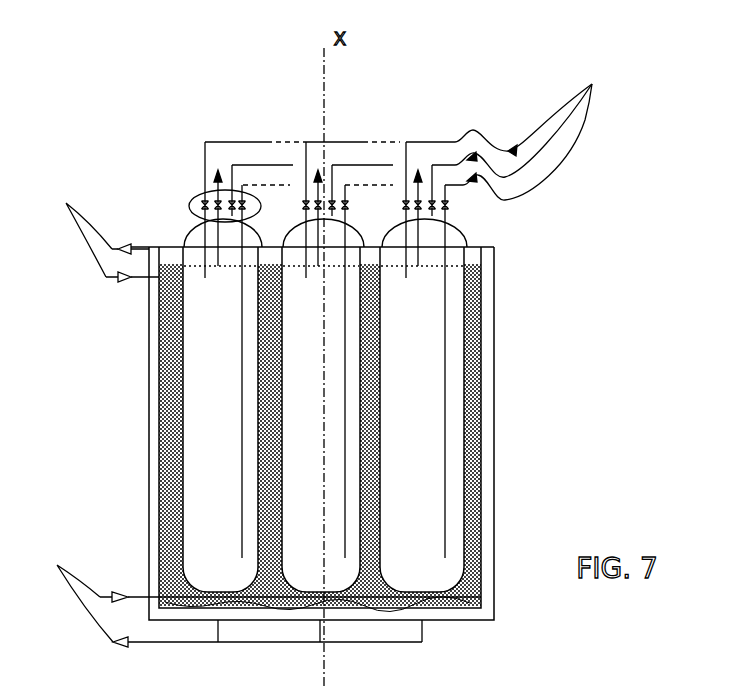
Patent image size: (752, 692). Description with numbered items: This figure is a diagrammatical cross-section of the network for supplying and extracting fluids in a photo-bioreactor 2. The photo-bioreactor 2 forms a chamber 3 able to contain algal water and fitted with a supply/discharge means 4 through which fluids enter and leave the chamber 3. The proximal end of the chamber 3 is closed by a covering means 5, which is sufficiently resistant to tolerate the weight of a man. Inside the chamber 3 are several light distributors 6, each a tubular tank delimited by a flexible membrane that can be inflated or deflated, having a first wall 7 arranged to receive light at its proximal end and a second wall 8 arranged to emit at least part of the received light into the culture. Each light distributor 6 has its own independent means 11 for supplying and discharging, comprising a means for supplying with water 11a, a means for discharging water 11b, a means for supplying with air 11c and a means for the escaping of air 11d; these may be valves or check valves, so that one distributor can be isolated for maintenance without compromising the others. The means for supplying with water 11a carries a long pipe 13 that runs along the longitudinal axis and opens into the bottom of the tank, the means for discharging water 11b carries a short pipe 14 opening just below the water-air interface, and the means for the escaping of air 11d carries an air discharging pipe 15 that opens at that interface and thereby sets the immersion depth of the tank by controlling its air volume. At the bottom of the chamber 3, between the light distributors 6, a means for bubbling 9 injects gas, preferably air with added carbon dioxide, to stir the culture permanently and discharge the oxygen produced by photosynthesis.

The photo-bioreactor 2 is at (512, 360).
The chamber 3 is at (484, 452).
The supply/discharge means 4 is at (592, 75).
The covering means 5 is at (172, 244).
The light distributor 6 is at (183, 222).
The first wall 7 is at (467, 232).
The second wall 8 is at (497, 262).
The means for bubbling 9 is at (387, 606).
The independent means for supplying and discharging 11 is at (198, 208).
The means for supplying with water 11a is at (352, 195).
The means for discharging water 11b is at (304, 196).
The means for supplying with air 11c is at (347, 187).
The means for the escaping of air 11d is at (308, 192).
The long pipe 13 is at (238, 487).
The short pipe 14 is at (204, 278).
The air discharging pipe 15 is at (221, 262).